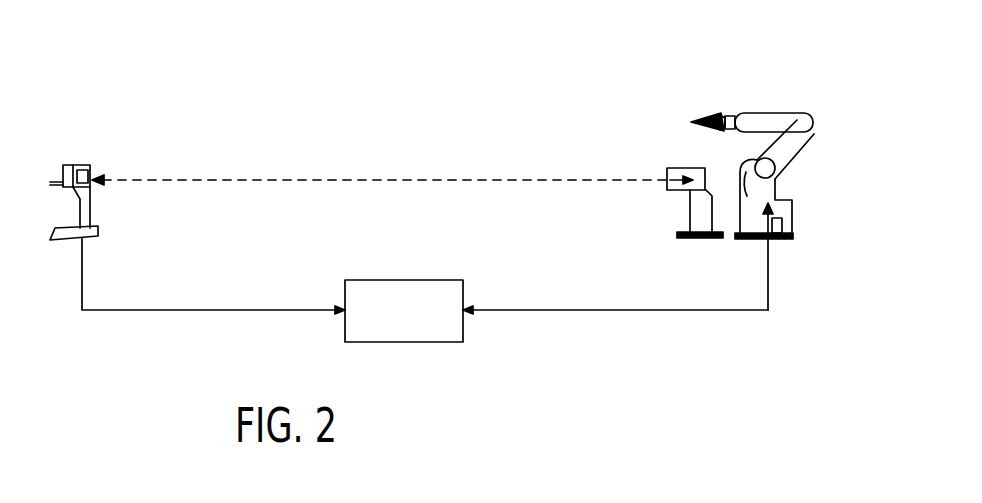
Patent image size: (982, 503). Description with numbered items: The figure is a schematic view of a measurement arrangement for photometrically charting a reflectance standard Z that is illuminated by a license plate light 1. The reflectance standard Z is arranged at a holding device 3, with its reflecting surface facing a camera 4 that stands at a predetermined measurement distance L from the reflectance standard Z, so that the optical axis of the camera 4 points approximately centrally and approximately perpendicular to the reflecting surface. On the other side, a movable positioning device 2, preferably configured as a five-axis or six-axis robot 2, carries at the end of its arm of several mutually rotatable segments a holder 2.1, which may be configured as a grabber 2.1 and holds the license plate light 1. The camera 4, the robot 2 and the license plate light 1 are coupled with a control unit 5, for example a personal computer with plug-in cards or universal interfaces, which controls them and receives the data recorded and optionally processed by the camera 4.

The license plate light 1 is at (698, 118).
The movable positioning device 2 is at (790, 133).
The holder 2.1 is at (716, 113).
The holding device 3 is at (692, 213).
The camera 4 is at (84, 162).
The control unit 5 is at (397, 323).
The reflectance standard Z is at (667, 170).
The measurement distance L is at (379, 166).